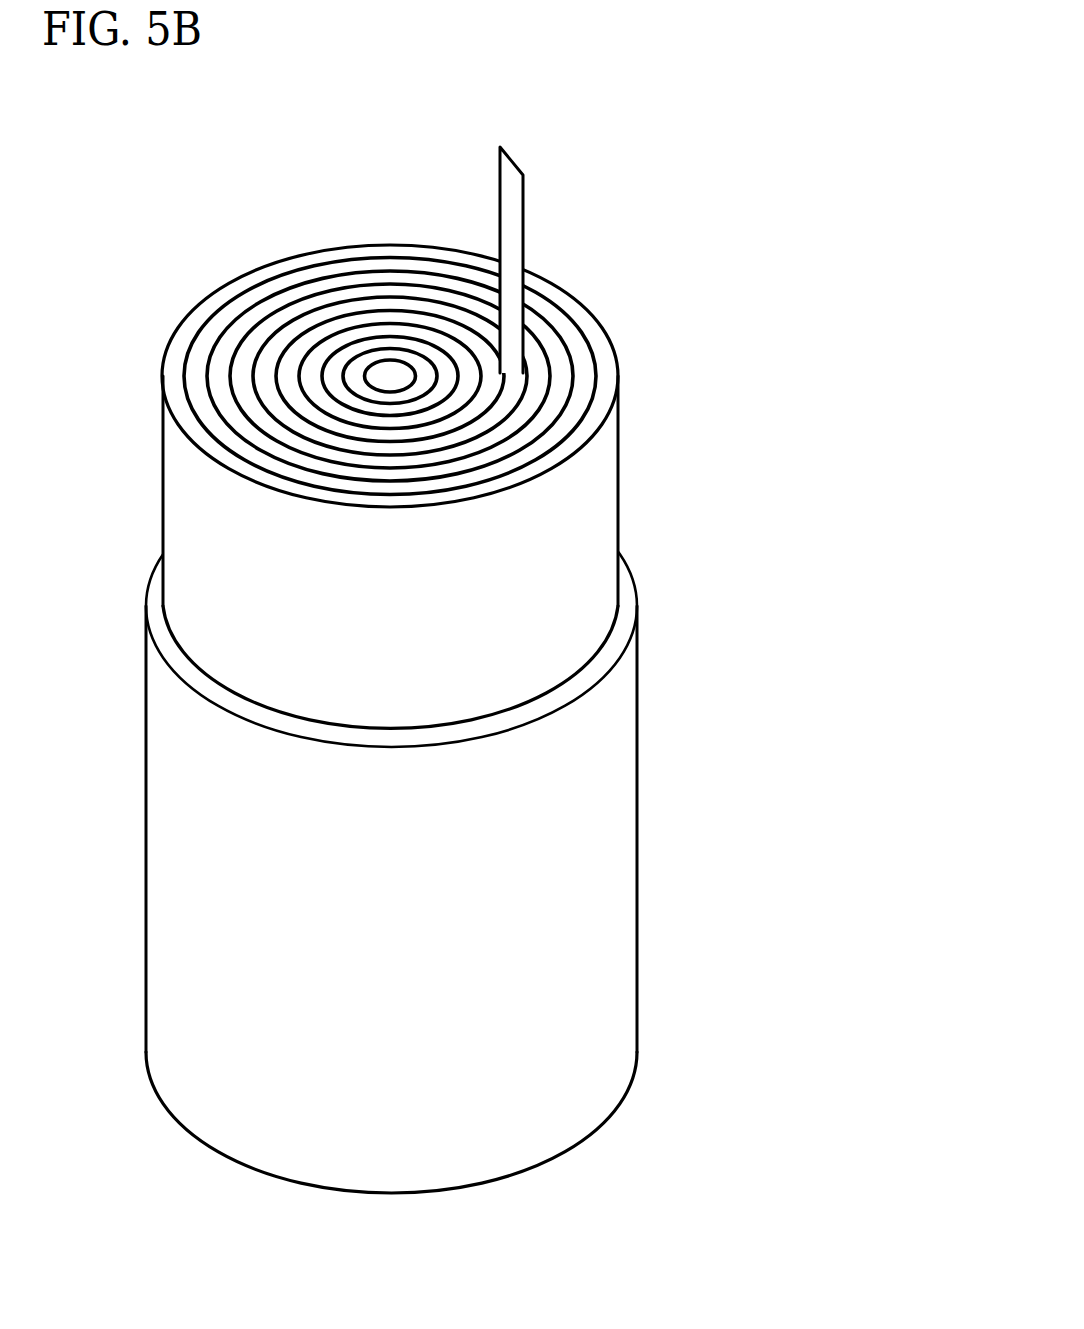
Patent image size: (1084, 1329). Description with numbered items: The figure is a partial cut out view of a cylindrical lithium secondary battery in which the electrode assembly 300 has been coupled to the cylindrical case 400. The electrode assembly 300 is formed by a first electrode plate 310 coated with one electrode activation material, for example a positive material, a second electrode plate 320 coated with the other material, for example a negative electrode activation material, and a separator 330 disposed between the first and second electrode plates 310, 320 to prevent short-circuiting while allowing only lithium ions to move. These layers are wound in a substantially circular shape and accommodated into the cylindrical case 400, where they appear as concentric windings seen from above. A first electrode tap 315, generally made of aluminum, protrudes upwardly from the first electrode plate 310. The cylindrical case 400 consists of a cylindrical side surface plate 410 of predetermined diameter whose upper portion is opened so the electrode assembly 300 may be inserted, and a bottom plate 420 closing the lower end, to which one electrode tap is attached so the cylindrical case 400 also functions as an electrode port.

The electrode assembly 300 is at (563, 376).
The first electrode plate 310 is at (557, 348).
The first electrode tap 315 is at (510, 199).
The second electrode plate 320 is at (582, 370).
The separator 330 is at (595, 420).
The cylindrical case 400 is at (555, 675).
The cylindrical side surface plate 410 is at (555, 599).
The bottom plate 420 is at (507, 1177).